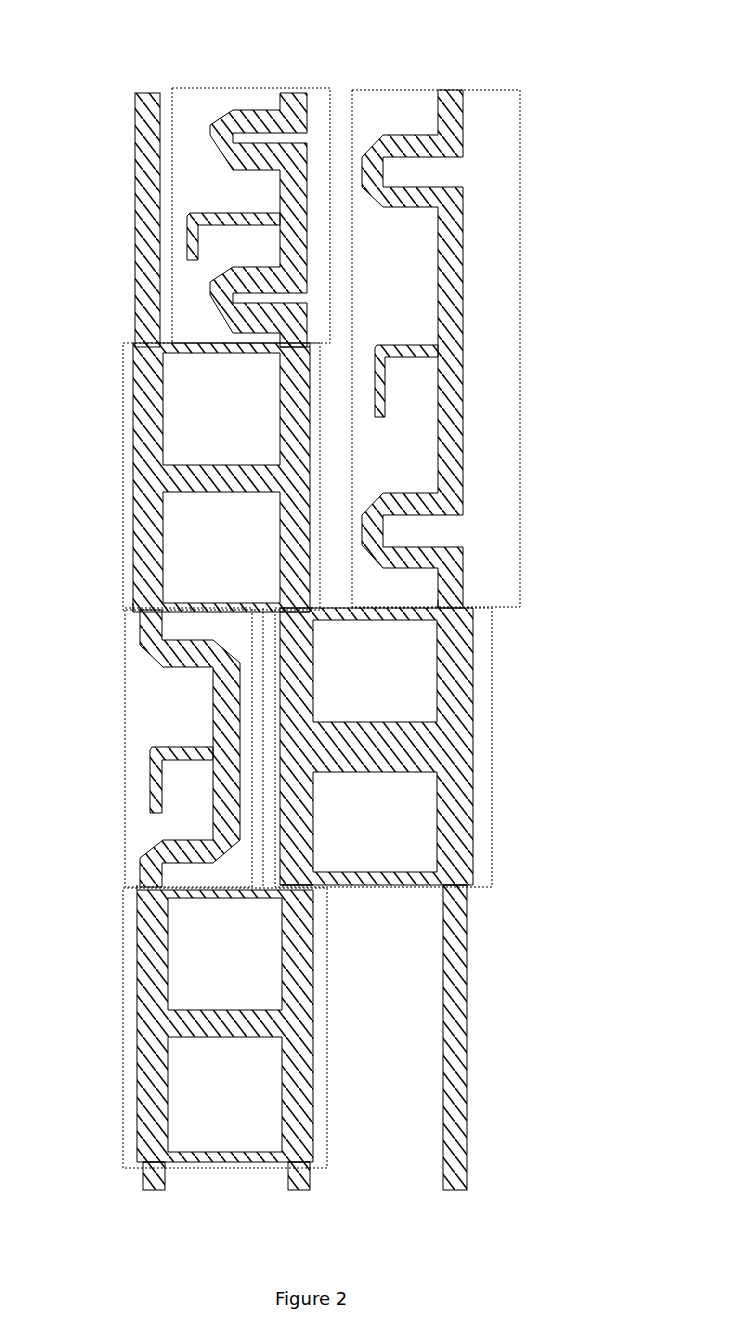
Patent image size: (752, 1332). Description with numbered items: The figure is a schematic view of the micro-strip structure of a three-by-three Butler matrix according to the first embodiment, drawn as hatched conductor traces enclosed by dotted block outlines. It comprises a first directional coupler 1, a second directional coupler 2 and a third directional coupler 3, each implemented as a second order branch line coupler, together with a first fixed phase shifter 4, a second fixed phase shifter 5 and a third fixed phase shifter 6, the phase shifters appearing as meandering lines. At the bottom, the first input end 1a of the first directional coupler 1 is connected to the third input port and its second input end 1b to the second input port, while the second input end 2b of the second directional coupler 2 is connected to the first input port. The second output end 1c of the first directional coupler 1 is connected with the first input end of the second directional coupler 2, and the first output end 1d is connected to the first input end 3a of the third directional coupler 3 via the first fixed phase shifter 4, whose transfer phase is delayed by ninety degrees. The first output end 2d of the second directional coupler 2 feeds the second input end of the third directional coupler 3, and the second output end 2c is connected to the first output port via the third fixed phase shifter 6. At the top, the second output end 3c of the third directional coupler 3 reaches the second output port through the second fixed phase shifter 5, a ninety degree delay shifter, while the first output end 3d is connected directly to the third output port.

The first directional coupler 1 is at (123, 1016).
The second directional coupler 2 is at (492, 752).
The third directional coupler 3 is at (123, 455).
The first fixed phase shifter 4 is at (125, 730).
The second fixed phase shifter 5 is at (233, 88).
The third fixed phase shifter 6 is at (520, 312).
The first input end of the first directional coupler 1a is at (126, 1174).
The second input end of the first directional coupler 1b is at (313, 1168).
The second output end of the first directional coupler 1c is at (351, 904).
The first output end of the first directional coupler 1d is at (112, 890).
The second input end of the second directional coupler 2b is at (474, 904).
The second output end of the second directional coupler 2c is at (418, 595).
The first output end of the second directional coupler 2d is at (344, 630).
The first input end of the third directional coupler 3a is at (106, 610).
The second output end of the third directional coupler 3c is at (277, 364).
The first output end of the third directional coupler 3d is at (141, 201).